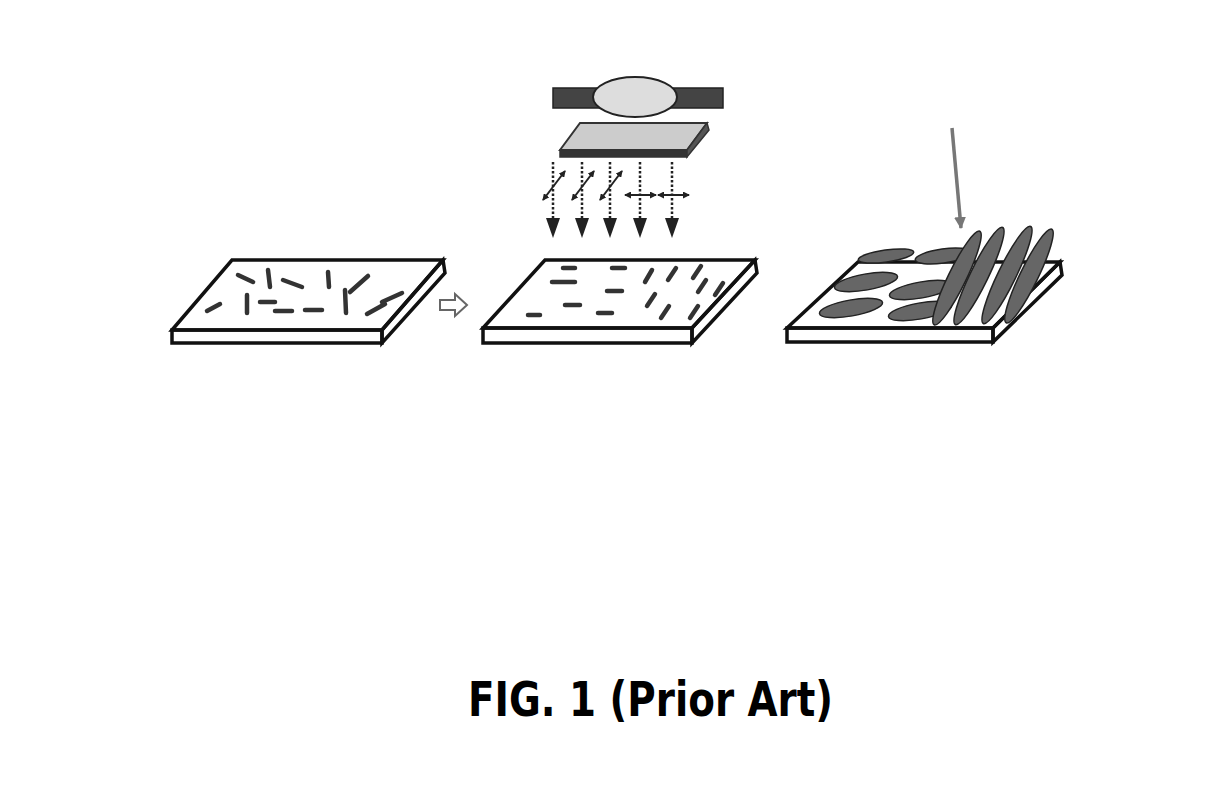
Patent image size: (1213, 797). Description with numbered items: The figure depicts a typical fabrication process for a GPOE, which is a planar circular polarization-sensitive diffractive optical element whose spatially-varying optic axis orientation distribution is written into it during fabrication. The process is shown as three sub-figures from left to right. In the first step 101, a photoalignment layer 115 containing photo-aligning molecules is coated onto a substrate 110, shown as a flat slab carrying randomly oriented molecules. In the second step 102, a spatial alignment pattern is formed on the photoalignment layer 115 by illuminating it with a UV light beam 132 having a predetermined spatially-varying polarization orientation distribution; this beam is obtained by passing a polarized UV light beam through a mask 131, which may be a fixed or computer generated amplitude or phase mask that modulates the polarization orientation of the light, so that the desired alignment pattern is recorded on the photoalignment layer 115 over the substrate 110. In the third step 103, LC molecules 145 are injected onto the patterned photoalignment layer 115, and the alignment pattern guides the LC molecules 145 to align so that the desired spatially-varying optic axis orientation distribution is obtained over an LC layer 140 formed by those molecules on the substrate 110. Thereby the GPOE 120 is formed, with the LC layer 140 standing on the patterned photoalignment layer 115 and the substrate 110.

The first step 101 is at (281, 494).
The second step 102 is at (622, 497).
The third step 103 is at (923, 497).
The substrate 110 is at (262, 333).
The photoalignment layer 115 is at (850, 270).
The GPOE 120 is at (1049, 232).
The mask 131 is at (683, 135).
The UV light beam 132 is at (590, 212).
The LC layer 140 is at (1042, 244).
The LC molecules 145 is at (1019, 138).